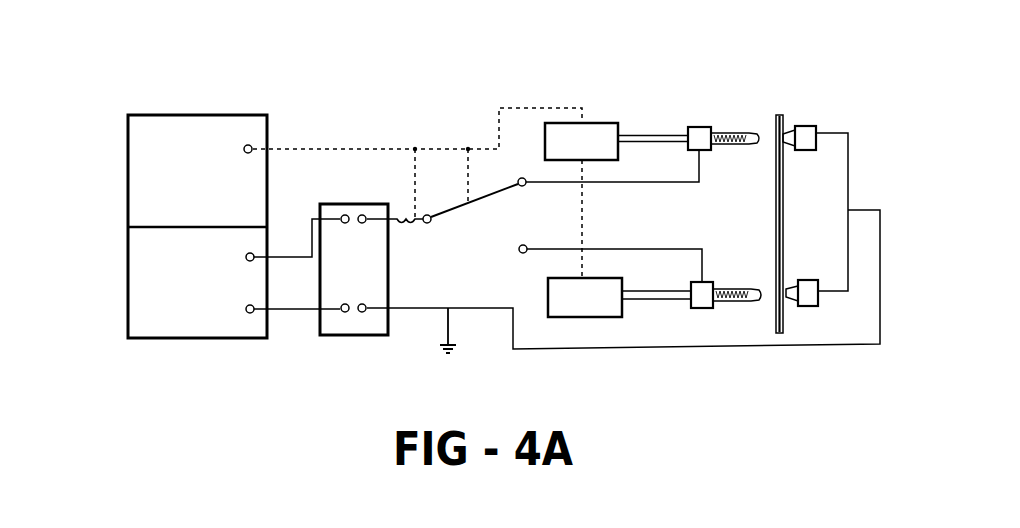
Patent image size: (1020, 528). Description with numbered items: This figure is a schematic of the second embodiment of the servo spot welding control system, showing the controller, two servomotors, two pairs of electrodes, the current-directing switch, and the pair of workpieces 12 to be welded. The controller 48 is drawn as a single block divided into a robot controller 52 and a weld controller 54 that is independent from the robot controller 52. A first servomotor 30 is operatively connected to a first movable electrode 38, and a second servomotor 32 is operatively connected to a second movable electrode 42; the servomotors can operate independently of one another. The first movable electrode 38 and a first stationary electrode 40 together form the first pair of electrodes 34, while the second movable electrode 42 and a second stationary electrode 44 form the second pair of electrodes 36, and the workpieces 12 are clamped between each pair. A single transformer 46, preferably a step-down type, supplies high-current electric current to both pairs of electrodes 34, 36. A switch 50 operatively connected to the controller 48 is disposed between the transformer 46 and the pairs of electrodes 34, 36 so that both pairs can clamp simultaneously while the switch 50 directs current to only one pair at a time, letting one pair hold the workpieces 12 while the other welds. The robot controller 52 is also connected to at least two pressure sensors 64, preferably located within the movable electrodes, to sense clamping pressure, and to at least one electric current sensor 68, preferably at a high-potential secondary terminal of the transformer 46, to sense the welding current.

The workpieces 12 is at (780, 113).
The first servomotor 30 is at (600, 123).
The second servomotor 32 is at (600, 278).
The first pair of electrodes 34 is at (737, 79).
The second pair of electrodes 36 is at (746, 348).
The first movable electrode 38 is at (735, 130).
The first stationary electrode 40 is at (790, 126).
The second movable electrode 42 is at (734, 302).
The second stationary electrode 44 is at (800, 280).
The transformer 46 is at (372, 204).
The controller 48 is at (176, 108).
The switch 50 is at (477, 204).
The robot controller 52 is at (126, 178).
The weld controller 54 is at (126, 302).
The pressure sensors 64 is at (728, 146).
The electric current sensor 68 is at (415, 224).